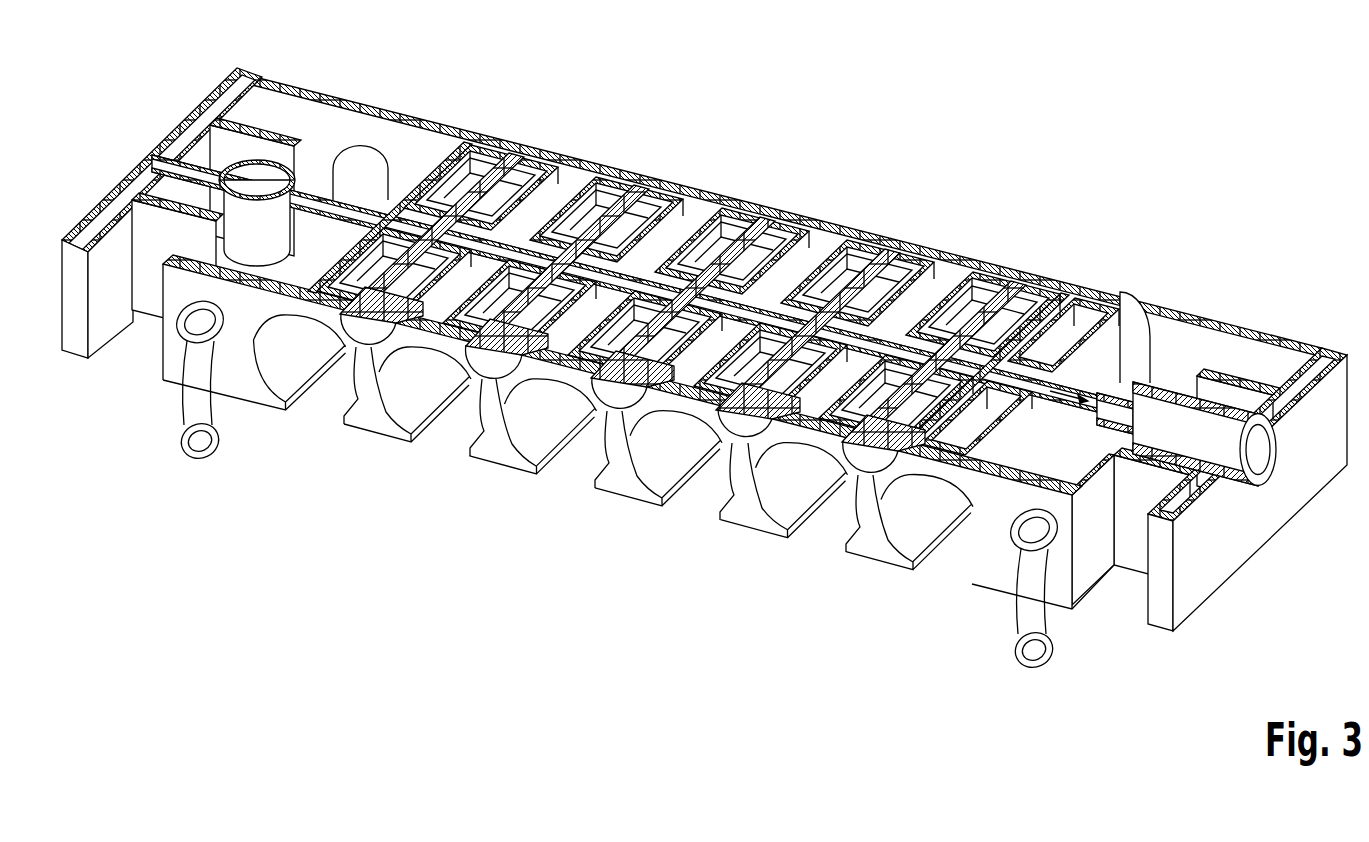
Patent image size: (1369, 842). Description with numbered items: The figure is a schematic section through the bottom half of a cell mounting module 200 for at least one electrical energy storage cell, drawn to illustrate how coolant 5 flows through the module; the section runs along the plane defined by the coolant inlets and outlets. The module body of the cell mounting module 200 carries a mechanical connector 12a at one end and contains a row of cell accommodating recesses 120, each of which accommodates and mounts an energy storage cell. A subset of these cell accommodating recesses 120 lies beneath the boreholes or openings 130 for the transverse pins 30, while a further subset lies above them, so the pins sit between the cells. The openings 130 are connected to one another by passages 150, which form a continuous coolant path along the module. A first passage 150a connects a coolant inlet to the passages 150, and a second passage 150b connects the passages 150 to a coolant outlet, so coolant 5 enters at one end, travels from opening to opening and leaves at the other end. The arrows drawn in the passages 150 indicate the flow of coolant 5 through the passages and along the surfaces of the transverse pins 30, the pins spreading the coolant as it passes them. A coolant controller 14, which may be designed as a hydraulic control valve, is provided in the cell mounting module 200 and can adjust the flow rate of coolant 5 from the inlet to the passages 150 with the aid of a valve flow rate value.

The cell mounting module 200 is at (1042, 136).
The mechanical connector 12a is at (262, 175).
The coolant controller 14 is at (1263, 436).
The coolant 5 is at (1086, 396).
The transverse pin 30 is at (370, 335).
The cell accommodating recess 120 is at (318, 405).
The opening for transverse pin 130 is at (500, 162).
The passage 150 is at (510, 240).
The first passage 150a is at (393, 213).
The second passage 150b is at (1064, 287).